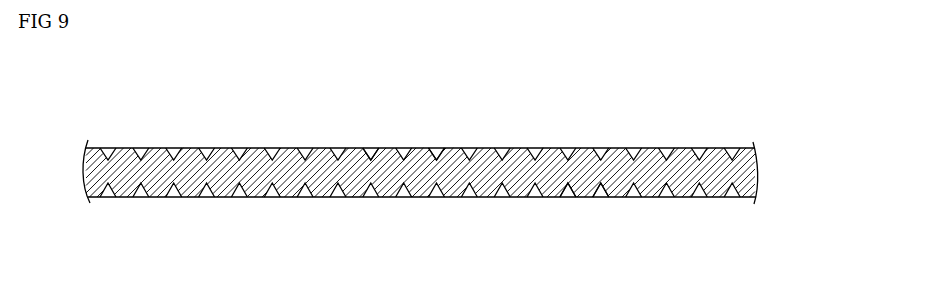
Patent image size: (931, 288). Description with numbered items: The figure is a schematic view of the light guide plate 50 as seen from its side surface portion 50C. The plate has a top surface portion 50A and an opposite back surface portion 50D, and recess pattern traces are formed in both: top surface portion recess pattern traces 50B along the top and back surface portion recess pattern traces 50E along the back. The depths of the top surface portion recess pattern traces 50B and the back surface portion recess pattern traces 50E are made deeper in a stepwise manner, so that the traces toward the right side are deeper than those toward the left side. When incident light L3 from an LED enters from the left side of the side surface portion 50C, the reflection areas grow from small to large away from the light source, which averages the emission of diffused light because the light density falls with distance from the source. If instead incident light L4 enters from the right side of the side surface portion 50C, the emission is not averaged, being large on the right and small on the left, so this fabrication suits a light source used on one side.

The light guide plate 50 is at (594, 104).
The top surface portion 50A is at (385, 148).
The top surface portion recess pattern trace 50B is at (435, 148).
The side surface portion 50C is at (748, 173).
The back surface portion 50D is at (557, 197).
The back surface portion recess pattern trace 50E is at (603, 197).
The incident light L3 is at (55, 173).
The incident light L4 is at (822, 173).